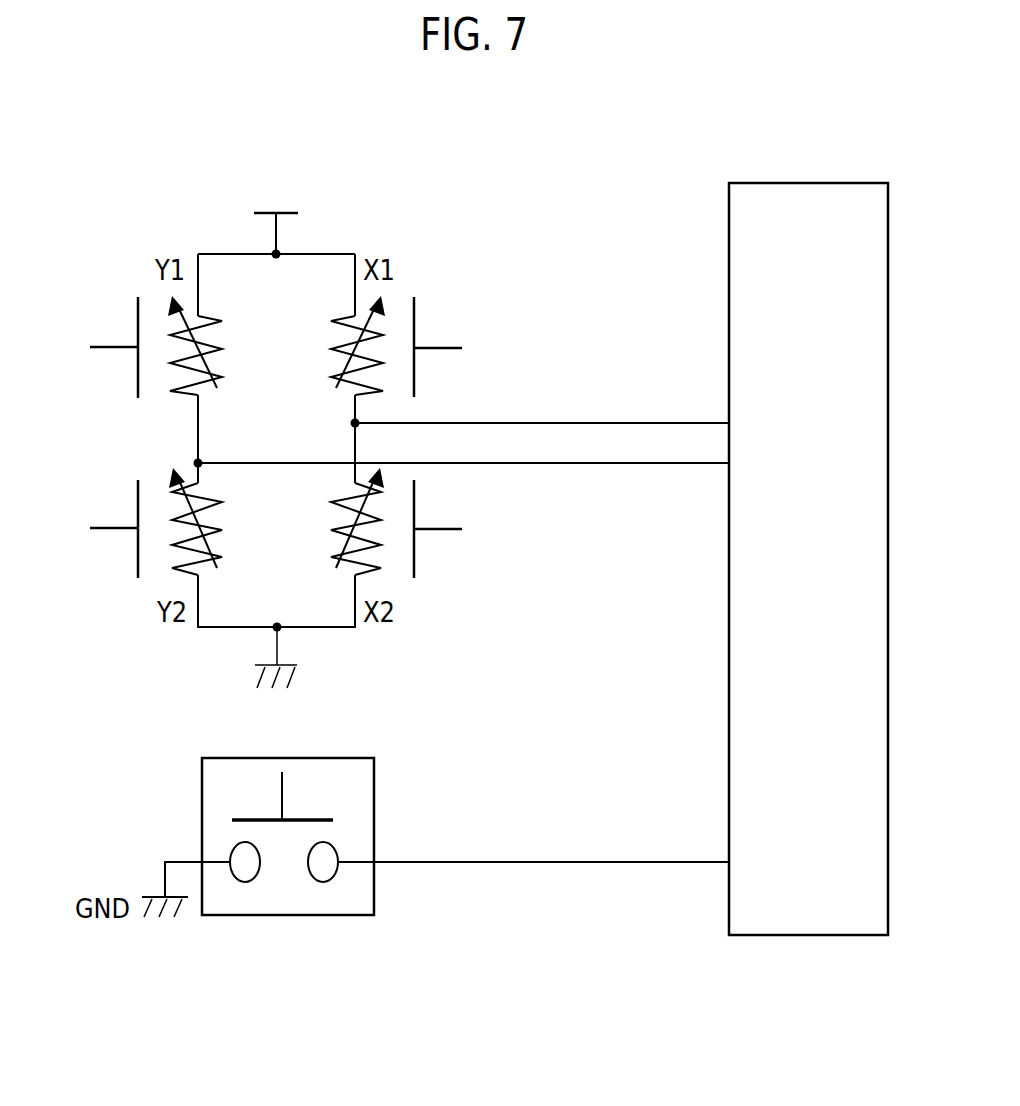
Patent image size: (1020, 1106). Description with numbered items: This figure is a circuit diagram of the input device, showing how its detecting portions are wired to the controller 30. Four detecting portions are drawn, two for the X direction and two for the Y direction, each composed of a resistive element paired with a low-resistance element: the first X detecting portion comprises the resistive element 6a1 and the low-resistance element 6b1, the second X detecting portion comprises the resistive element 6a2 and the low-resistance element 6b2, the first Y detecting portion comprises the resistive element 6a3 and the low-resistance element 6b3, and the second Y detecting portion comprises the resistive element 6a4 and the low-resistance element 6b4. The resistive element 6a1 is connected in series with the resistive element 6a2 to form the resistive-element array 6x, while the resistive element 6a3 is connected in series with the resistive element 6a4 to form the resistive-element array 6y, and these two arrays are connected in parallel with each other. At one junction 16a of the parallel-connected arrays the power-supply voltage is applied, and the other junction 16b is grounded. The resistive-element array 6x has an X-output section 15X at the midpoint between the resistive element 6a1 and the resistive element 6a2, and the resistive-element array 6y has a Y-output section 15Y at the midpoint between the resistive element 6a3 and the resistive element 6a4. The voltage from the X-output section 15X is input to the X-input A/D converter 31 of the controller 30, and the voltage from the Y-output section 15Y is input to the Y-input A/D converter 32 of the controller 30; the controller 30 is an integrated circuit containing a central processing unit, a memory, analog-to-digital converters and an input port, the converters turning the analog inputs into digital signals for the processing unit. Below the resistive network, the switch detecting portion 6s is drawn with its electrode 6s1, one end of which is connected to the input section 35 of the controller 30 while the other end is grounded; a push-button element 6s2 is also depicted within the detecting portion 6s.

The controller 30 is at (888, 528).
The X-input A/D converter 31 is at (727, 420).
The Y-input A/D converter 32 is at (727, 465).
The input section 35 is at (727, 865).
The junction 16a is at (274, 254).
The junction 16b is at (272, 630).
The X-output section 15X is at (496, 412).
The Y-output section 15Y is at (405, 474).
The resistive element 6a1 is at (338, 320).
The resistive element 6a2 is at (338, 525).
The resistive element 6a3 is at (216, 312).
The resistive element 6a4 is at (216, 496).
The low-resistance element 6b1 is at (414, 310).
The low-resistance element 6b2 is at (414, 563).
The low-resistance element 6b3 is at (138, 380).
The low-resistance element 6b4 is at (138, 562).
The resistive-element array 6x is at (365, 628).
The resistive-element array 6y is at (189, 628).
The detecting portion 6s is at (333, 896).
The electrode 6s1 is at (323, 882).
The push button 6s2 is at (313, 820).